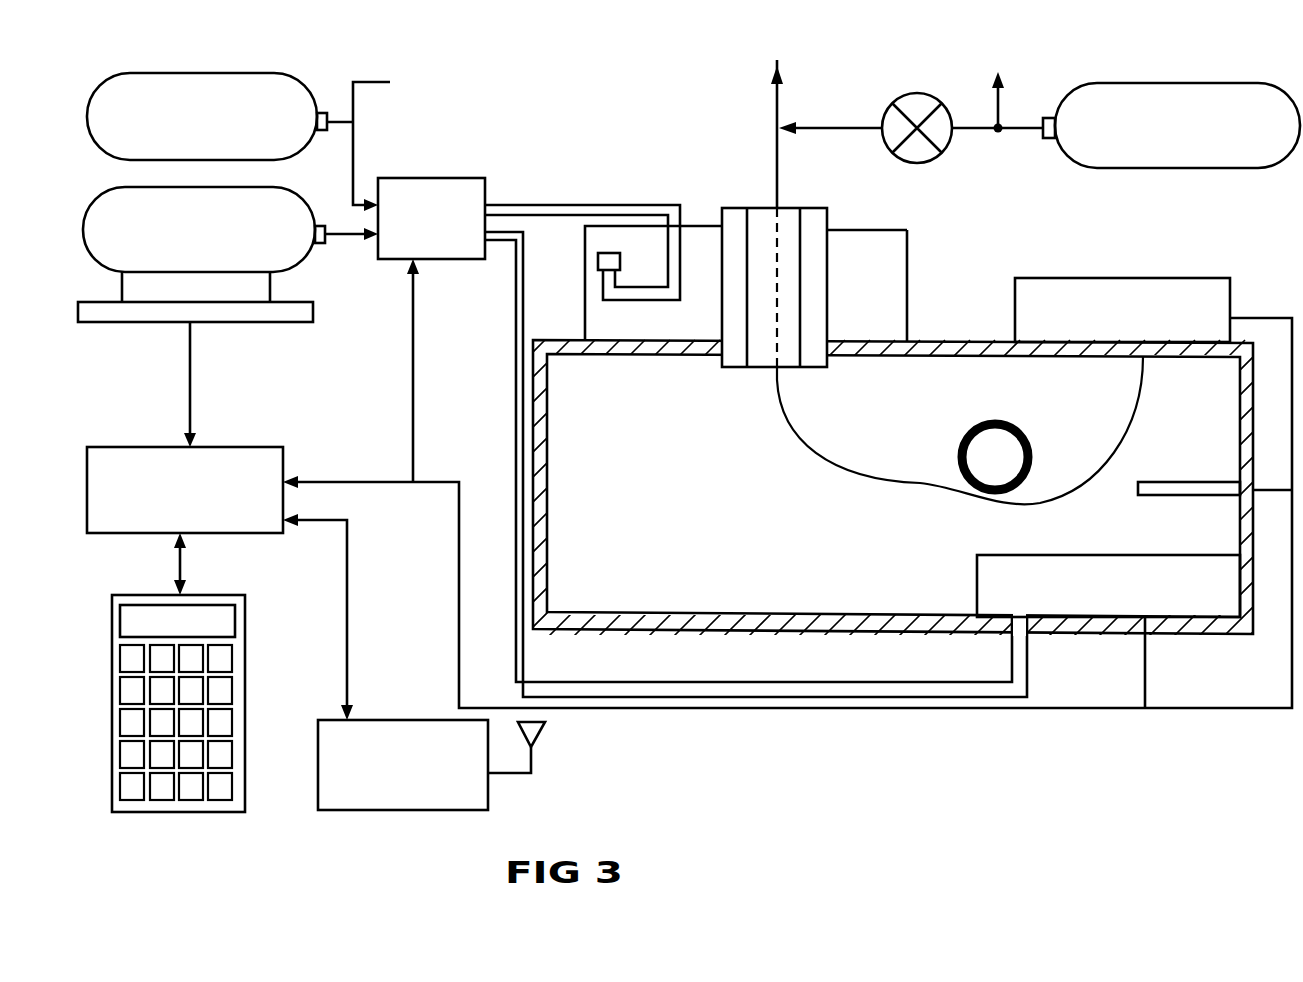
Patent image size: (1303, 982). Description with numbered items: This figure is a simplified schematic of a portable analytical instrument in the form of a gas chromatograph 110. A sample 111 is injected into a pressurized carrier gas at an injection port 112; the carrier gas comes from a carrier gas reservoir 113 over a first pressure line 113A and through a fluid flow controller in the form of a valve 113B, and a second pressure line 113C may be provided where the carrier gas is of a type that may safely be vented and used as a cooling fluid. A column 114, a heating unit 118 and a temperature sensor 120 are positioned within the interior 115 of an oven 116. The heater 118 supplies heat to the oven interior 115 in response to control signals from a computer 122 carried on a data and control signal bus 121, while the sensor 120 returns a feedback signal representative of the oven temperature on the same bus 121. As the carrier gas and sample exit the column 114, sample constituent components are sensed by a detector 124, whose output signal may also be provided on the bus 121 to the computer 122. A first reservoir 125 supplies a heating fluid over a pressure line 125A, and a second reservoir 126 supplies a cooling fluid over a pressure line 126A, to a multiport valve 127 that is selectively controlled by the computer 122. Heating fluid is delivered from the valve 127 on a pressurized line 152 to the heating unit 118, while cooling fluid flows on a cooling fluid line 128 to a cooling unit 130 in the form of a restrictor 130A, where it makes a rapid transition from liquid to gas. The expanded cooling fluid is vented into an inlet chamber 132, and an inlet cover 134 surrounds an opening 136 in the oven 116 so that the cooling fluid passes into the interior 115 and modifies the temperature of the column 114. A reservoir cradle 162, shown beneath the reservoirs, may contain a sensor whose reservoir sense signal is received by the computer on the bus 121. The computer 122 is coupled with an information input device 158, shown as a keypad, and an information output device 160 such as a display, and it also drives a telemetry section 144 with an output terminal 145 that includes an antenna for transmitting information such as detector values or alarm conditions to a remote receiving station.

The gas chromatograph 110 is at (660, 130).
The sample 111 is at (723, 55).
The injection port 112 is at (811, 206).
The carrier gas reservoir 113 is at (1301, 178).
The first pressure line 113A is at (978, 130).
The valve 113B is at (883, 112).
The second pressure line 113C is at (1001, 110).
The column 114 is at (825, 448).
The oven interior 115 is at (719, 529).
The oven 116 is at (795, 633).
The heating unit 118 is at (1045, 567).
The temperature sensor 120 is at (1210, 482).
The data and control signal bus 121 is at (440, 480).
The computer 122 is at (100, 533).
The detector 124 is at (1133, 278).
The first reservoir 125 is at (82, 218).
The pressure line 125A is at (342, 238).
The second reservoir 126 is at (85, 112).
The pressure line 126A is at (342, 125).
The multiport valve 127 is at (418, 178).
The cooling fluid line 128 is at (540, 204).
The cooling unit 130 is at (703, 223).
The restrictor 130A is at (650, 250).
The inlet chamber 132 is at (875, 245).
The inlet cover 134 is at (907, 290).
The opening 136 is at (657, 354).
The telemetry section 144 is at (468, 810).
The telemetry output terminal 145 is at (545, 749).
The pressurized line 152 is at (517, 281).
The information input device 158 is at (240, 740).
The information output device 160 is at (217, 622).
The reservoir cradle 162 is at (97, 323).